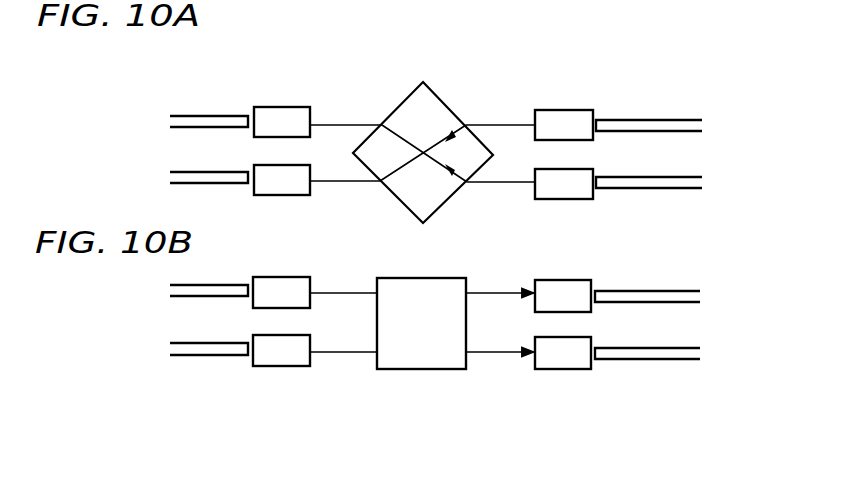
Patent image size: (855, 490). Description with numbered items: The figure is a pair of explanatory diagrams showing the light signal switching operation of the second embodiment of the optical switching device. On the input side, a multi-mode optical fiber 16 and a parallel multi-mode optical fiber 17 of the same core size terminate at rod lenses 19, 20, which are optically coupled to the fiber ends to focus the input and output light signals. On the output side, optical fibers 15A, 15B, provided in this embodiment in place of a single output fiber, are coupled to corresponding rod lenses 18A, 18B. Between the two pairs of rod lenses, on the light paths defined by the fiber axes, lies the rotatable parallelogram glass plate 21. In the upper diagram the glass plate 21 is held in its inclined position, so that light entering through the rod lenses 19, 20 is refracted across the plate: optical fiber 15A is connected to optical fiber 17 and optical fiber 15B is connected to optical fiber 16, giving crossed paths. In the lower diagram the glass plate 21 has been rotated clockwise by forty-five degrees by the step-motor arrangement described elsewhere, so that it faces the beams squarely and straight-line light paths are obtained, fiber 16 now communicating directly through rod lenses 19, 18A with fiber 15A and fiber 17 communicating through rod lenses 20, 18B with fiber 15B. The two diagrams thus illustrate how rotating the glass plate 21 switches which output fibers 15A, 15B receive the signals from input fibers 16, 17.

In FIG. 10A, the optical fiber 15A is at (652, 119).
In FIG. 10B, the optical fiber 15A is at (680, 291).
In FIG. 10A, the optical fiber 15B is at (632, 188).
In FIG. 10B, the optical fiber 15B is at (647, 360).
In FIG. 10A, the optical fiber 16 is at (190, 115).
In FIG. 10B, the optical fiber 16 is at (173, 297).
In FIG. 10A, the optical fiber 17 is at (182, 173).
In FIG. 10B, the optical fiber 17 is at (185, 357).
In FIG. 10A, the rod lens 18A is at (572, 110).
In FIG. 10B, the rod lens 18A is at (560, 280).
In FIG. 10A, the rod lens 18B is at (535, 192).
In FIG. 10B, the rod lens 18B is at (545, 370).
In FIG. 10A, the rod lens 19 is at (295, 107).
In FIG. 10B, the rod lens 19 is at (278, 277).
In FIG. 10A, the rod lens 20 is at (265, 197).
In FIG. 10B, the rod lens 20 is at (285, 367).
In FIG. 10A, the glass plate 21 is at (438, 113).
In FIG. 10B, the glass plate 21 is at (403, 369).